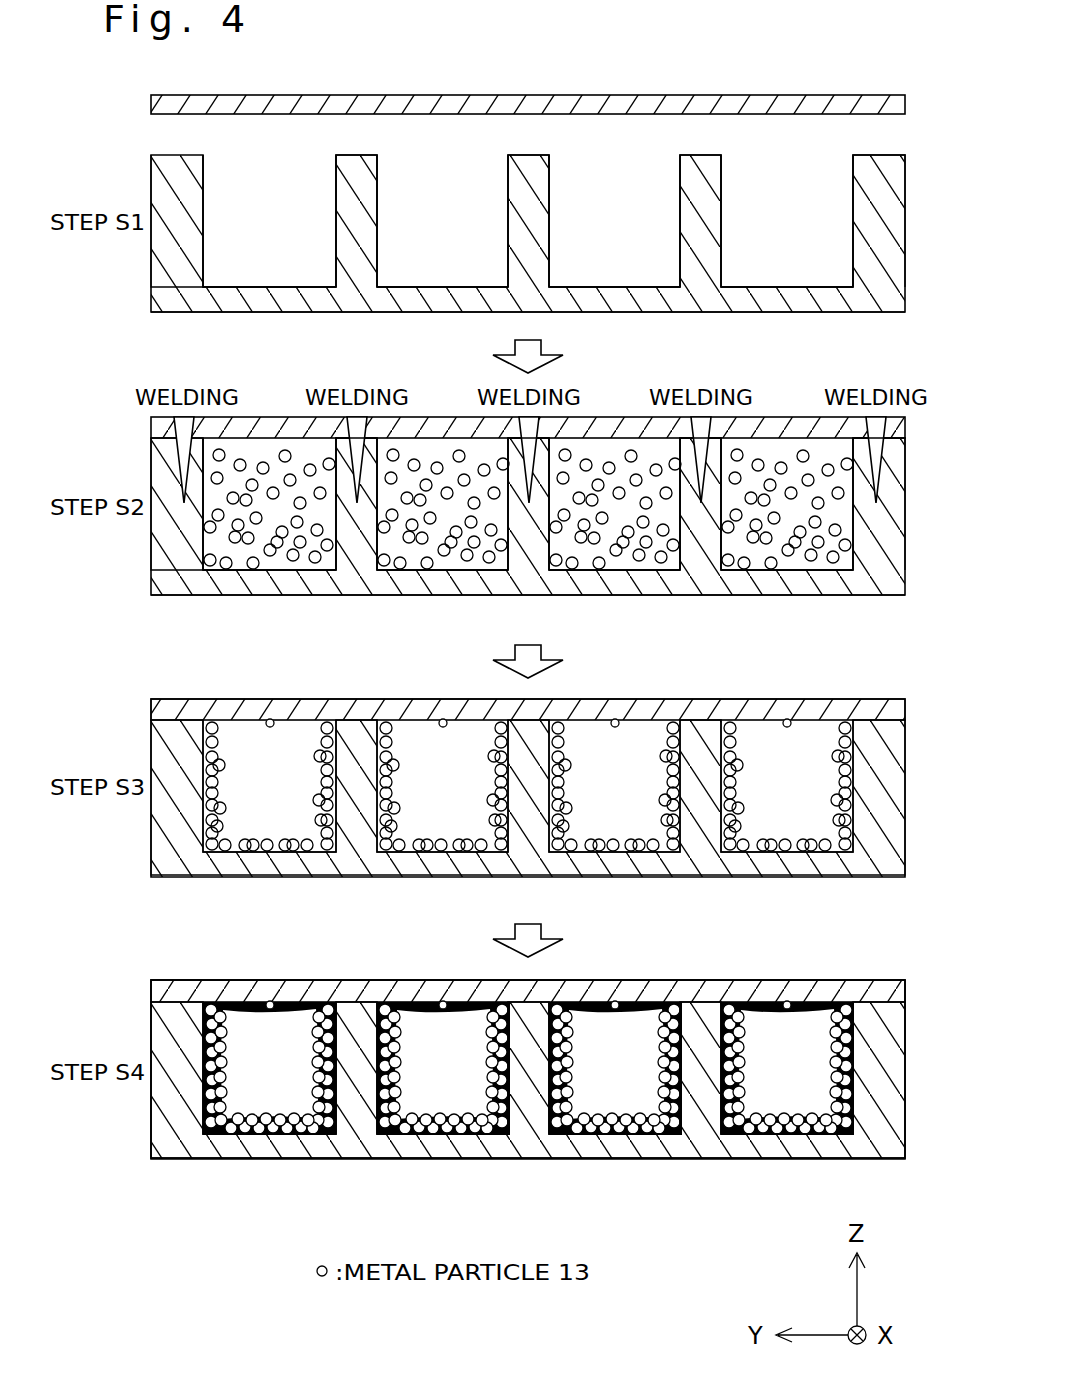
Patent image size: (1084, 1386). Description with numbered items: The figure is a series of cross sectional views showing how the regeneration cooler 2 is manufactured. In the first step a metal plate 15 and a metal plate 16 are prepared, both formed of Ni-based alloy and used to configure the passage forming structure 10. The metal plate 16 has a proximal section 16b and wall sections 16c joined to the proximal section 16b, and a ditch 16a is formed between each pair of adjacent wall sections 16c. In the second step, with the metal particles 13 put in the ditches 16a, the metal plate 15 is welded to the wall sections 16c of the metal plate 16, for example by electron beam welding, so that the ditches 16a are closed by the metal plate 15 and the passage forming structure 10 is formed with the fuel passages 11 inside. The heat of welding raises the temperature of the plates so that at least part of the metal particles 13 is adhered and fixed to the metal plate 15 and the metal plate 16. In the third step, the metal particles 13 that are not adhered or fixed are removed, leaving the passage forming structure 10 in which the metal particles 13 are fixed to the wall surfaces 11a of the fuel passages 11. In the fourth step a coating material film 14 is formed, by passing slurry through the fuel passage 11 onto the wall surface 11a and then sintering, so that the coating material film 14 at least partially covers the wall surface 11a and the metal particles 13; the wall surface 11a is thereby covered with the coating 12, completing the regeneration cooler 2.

The regeneration cooler 2 is at (917, 995).
The passage forming structure 10 is at (898, 792).
The fuel passage 11 is at (528, 786).
The wall surface 11a is at (270, 718).
The coating 12 is at (295, 1192).
The metal particle 13 is at (226, 566).
The coating material film 14 is at (272, 1134).
The metal plate 15 is at (815, 108).
The metal plate 16 is at (886, 300).
The ditch 16a is at (274, 187).
The proximal section 16b is at (783, 302).
The wall section 16c is at (363, 198).